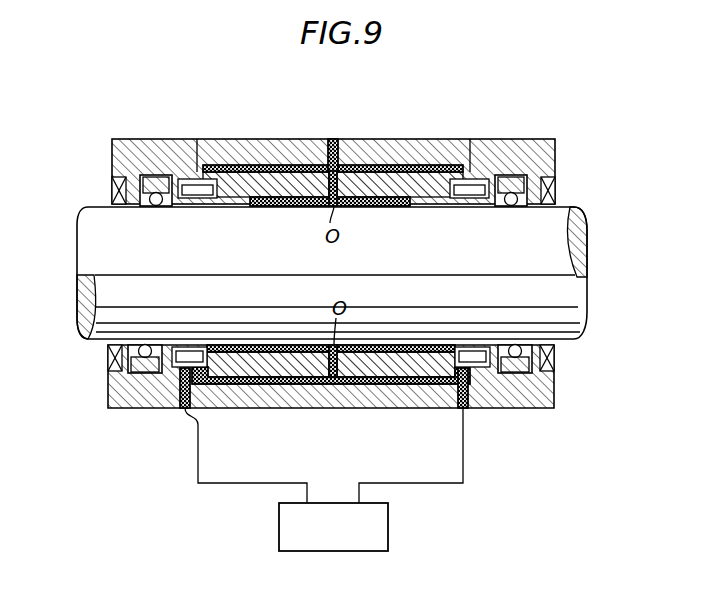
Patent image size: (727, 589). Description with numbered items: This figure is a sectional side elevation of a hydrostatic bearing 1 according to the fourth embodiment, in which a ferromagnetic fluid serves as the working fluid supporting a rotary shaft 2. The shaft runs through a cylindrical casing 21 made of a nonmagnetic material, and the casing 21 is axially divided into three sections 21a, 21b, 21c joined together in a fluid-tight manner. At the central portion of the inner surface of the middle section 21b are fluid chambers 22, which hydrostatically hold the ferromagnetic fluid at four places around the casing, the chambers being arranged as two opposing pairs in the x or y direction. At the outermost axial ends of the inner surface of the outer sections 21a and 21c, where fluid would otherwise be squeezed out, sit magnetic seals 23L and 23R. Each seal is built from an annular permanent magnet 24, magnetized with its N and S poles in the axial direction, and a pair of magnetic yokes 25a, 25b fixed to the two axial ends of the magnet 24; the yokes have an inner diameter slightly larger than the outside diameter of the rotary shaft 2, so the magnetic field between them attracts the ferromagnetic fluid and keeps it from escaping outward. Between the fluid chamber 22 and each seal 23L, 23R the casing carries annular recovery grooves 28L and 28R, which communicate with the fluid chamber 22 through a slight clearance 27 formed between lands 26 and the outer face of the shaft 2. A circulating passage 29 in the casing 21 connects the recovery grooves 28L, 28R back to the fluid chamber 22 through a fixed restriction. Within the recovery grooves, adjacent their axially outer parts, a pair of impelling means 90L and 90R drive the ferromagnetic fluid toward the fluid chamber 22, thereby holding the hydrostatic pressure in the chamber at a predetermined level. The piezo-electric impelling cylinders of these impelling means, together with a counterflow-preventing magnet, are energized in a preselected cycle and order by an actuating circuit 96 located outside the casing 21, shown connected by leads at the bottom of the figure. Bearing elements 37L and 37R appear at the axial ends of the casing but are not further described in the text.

The hydrostatic bearing 1 is at (552, 137).
The rotary shaft 2 is at (573, 315).
The cylindrical casing 21 is at (365, 139).
The casing section 21a is at (139, 172).
The casing section 21b is at (303, 172).
The casing section 21c is at (503, 170).
The fluid chamber 22 is at (336, 139).
The magnetic seal 23L is at (150, 383).
The magnetic seal 23R is at (508, 386).
The annular permanent magnet 24 is at (136, 377).
The magnetic yoke 25a is at (108, 373).
The magnetic yoke 25b is at (180, 367).
The land 26 is at (248, 165).
The clearance 27 is at (234, 377).
The recovery groove 28L is at (222, 179).
The recovery groove 28R is at (472, 179).
The circulating passage 29 is at (340, 384).
The left bearing 37L is at (112, 190).
The right bearing 37R is at (555, 190).
The impelling means 90L is at (180, 182).
The impelling means 90R is at (476, 182).
The actuating circuit 96 is at (388, 527).